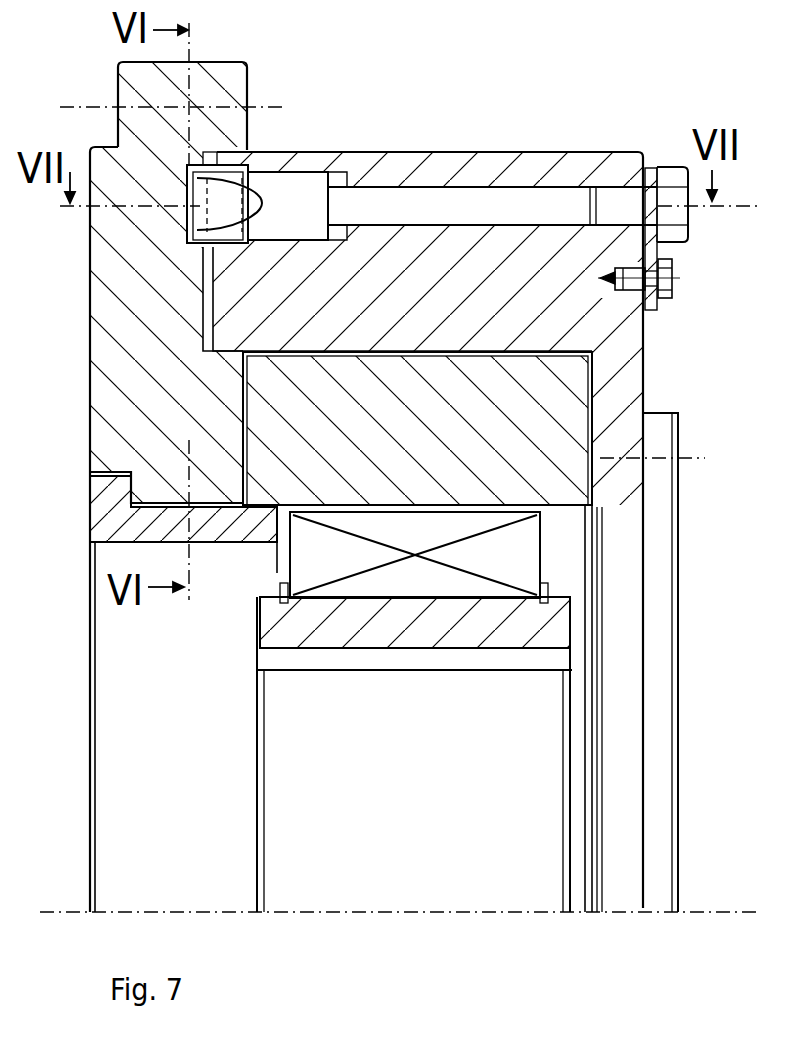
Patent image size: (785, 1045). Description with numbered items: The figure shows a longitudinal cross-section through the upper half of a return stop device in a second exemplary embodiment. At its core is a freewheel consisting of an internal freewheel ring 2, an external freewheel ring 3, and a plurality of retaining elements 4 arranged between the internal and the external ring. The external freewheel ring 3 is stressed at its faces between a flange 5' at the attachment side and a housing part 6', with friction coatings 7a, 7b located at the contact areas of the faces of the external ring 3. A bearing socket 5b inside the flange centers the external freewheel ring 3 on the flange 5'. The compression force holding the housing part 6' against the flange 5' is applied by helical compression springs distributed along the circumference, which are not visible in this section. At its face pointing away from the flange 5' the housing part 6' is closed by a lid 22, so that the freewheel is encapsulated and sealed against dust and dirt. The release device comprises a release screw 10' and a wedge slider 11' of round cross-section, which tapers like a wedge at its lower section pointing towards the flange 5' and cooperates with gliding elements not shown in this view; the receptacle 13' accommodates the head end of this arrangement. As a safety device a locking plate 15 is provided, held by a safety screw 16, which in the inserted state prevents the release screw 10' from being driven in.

The internal freewheel ring 2 is at (460, 632).
The external freewheel ring 3 is at (562, 482).
The retaining elements 4 is at (510, 582).
The flange 5' is at (187, 78).
The bearing socket 5b is at (212, 543).
The housing part 6' is at (455, 530).
The friction coating 7a is at (240, 512).
The friction coating 7b is at (590, 467).
The release screw 10' is at (508, 168).
The wedge slider 11' is at (297, 158).
The bolt head receptacle 13' is at (152, 217).
The locking plate 15 is at (658, 308).
The safety screw 16 is at (677, 273).
The lid 22 is at (657, 777).